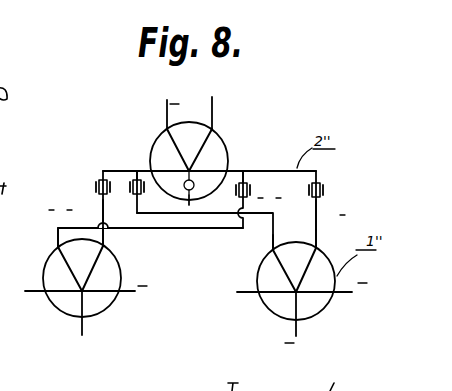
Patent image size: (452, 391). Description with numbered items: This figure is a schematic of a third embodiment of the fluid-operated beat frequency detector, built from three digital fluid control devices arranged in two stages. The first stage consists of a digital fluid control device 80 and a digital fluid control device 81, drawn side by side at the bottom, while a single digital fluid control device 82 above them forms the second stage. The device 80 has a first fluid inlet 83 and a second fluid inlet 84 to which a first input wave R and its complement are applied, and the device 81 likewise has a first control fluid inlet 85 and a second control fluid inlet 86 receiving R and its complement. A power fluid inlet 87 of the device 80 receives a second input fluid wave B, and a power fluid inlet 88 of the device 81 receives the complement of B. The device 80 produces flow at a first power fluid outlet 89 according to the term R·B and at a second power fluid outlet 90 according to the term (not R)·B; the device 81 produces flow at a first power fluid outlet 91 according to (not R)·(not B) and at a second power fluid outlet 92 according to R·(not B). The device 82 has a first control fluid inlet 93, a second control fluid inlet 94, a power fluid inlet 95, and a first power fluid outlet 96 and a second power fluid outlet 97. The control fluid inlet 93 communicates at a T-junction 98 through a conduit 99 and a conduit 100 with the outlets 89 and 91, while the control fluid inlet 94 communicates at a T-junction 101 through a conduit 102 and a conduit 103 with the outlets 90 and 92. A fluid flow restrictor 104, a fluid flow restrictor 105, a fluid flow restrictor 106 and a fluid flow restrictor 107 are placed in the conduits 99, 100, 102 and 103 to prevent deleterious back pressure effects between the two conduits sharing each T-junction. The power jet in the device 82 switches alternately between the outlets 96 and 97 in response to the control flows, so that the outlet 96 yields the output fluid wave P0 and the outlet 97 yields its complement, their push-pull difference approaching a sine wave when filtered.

The digital fluid control device 80 is at (45, 268).
The digital fluid control device 81 is at (257, 273).
The digital fluid control device 82 is at (230, 135).
The first fluid inlet 83 is at (43, 292).
The second fluid inlet 84 is at (121, 280).
The first control fluid inlet 85 is at (258, 300).
The second control fluid inlet 86 is at (337, 297).
The power fluid inlet 87 is at (84, 303).
The power fluid inlet 88 is at (298, 312).
The first power fluid outlet 89 is at (144, 250).
The second power fluid outlet 90 is at (58, 240).
The first power fluid outlet 91 is at (272, 243).
The second power fluid outlet 92 is at (317, 246).
The first control fluid inlet 93 is at (150, 168).
The second control fluid inlet 94 is at (228, 167).
The power fluid inlet 95 is at (190, 206).
The first power fluid outlet 96 is at (213, 106).
The second power fluid outlet 97 is at (167, 104).
The T-junction 98 is at (137, 172).
The conduit 99 is at (103, 208).
The conduit 100 is at (138, 213).
The T-junction 101 is at (245, 170).
The conduit 102 is at (233, 231).
The conduit 103 is at (318, 205).
The fluid flow restrictor 104 is at (98, 186).
The fluid flow restrictor 105 is at (141, 193).
The fluid flow restrictor 106 is at (249, 190).
The fluid flow restrictor 107 is at (322, 190).